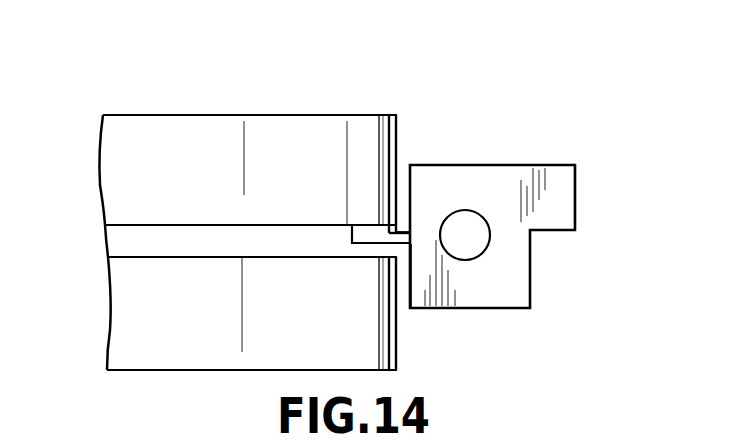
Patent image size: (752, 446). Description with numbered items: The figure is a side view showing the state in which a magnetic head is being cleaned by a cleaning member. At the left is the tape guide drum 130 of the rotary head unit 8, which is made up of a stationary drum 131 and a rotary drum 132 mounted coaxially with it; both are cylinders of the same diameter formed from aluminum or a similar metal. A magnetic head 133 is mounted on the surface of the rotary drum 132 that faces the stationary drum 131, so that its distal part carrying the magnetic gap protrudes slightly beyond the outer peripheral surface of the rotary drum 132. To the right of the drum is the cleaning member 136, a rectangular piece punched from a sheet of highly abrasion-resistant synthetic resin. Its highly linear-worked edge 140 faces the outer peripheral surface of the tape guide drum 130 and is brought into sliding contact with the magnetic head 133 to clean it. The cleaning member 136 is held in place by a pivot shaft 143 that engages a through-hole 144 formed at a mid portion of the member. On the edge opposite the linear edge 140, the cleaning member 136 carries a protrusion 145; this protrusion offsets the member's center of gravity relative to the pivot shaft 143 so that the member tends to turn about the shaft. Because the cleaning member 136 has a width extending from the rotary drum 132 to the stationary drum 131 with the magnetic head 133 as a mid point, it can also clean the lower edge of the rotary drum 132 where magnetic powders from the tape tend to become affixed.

The rotary head unit 8 is at (347, 115).
The tape guide drum 130 is at (182, 122).
The stationary drum 131 is at (117, 306).
The rotary drum 132 is at (112, 182).
The magnetic head 133 is at (398, 236).
The cleaning member 136 is at (505, 178).
The linear edge 140 is at (407, 290).
The pivot shaft 143 is at (478, 238).
The through-hole 144 is at (467, 247).
The protrusion 145 is at (565, 190).